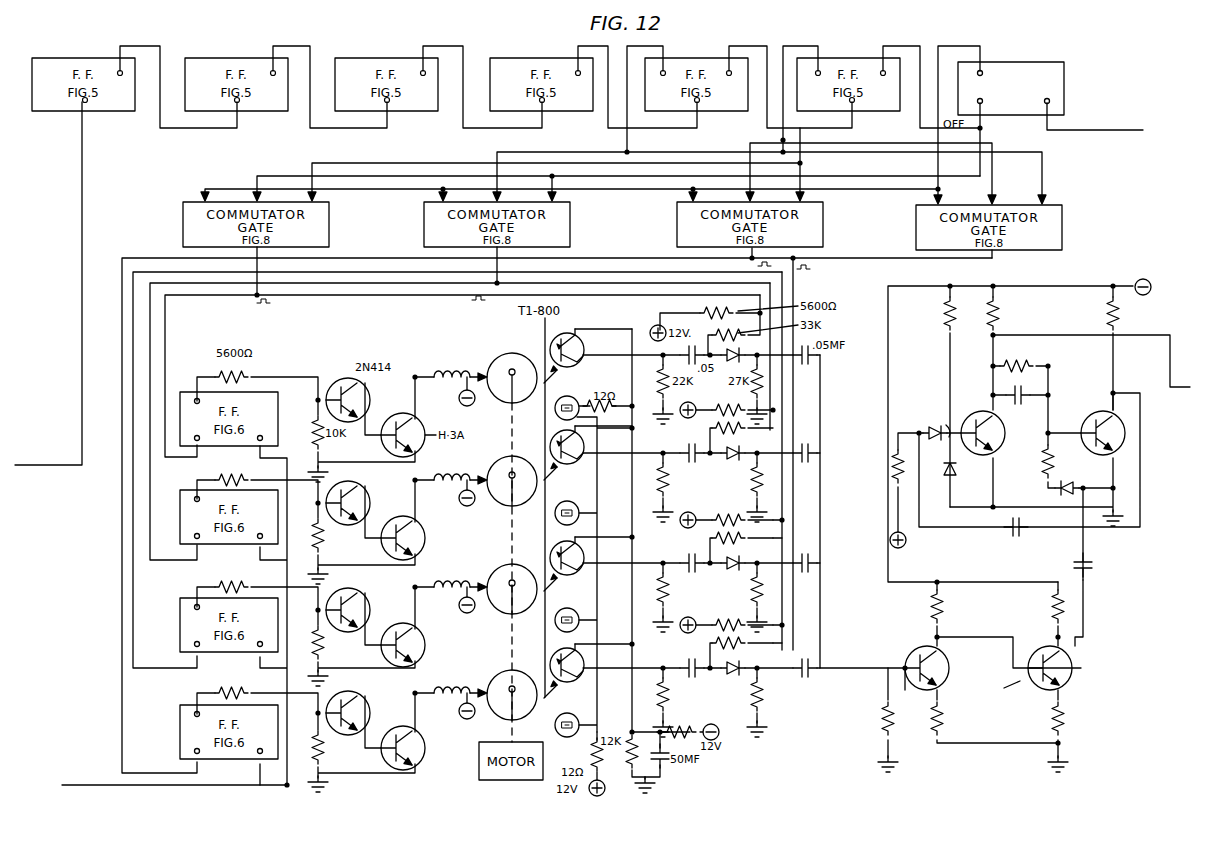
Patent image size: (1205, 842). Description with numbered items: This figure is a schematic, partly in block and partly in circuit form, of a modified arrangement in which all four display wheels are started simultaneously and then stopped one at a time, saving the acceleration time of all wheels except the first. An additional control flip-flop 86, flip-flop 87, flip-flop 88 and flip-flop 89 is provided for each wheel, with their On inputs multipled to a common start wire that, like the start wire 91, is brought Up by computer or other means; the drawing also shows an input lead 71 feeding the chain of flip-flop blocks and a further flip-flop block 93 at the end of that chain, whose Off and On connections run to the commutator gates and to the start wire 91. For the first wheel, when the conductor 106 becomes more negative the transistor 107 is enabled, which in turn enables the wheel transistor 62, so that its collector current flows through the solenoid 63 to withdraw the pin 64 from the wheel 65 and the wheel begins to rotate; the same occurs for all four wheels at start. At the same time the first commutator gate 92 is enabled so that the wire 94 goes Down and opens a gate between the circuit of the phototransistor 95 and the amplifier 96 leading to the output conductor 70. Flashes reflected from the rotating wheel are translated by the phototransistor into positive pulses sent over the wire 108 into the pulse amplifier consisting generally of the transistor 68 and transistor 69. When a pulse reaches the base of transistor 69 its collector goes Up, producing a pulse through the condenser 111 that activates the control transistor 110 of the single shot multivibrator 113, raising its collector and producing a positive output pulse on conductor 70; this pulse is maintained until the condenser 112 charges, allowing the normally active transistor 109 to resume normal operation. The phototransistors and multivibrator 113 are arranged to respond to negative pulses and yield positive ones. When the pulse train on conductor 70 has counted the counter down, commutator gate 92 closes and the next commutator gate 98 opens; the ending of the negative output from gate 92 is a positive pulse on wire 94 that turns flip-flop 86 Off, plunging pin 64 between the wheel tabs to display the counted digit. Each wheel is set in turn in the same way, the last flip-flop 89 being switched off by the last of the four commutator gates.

The wheel transistor 62 is at (341, 381).
The solenoid 63 is at (443, 371).
The pin 64 is at (482, 372).
The wheel 65 is at (512, 351).
The transistor 68 is at (916, 653).
The transistor 69 is at (1048, 653).
The output conductor 70 is at (1168, 366).
The input lead 71 is at (82, 450).
The flip-flop 86 is at (190, 392).
The flip-flop 87 is at (180, 489).
The flip-flop 88 is at (170, 602).
The flip-flop 89 is at (170, 709).
The start wire 91 is at (1126, 130).
The first commutator gate 92 is at (330, 214).
The flip-flop 93 is at (1050, 61).
The wire 94 is at (212, 303).
The phototransistor 95 is at (580, 368).
The amplifier 96 is at (988, 675).
The commutator gate 98 is at (574, 212).
The conductor 106 is at (212, 377).
The transistor 107 is at (405, 412).
The wire 108 is at (865, 669).
The normally active transistor 109 is at (1085, 452).
The control transistor 110 is at (965, 460).
The condenser 111 is at (1087, 554).
The condenser 112 is at (1021, 522).
The single shot multivibrator 113 is at (1033, 430).